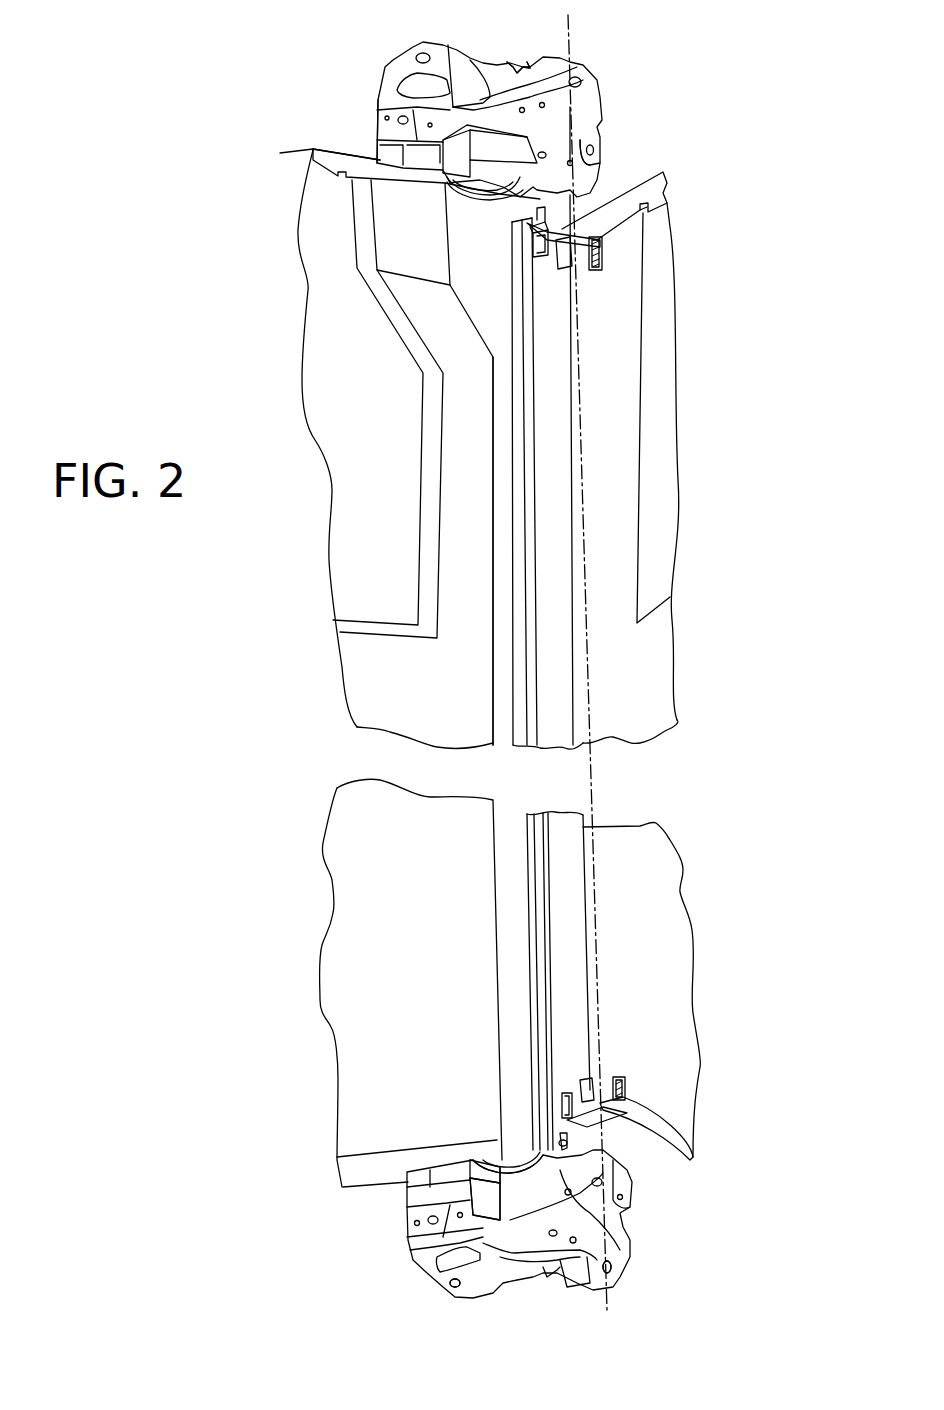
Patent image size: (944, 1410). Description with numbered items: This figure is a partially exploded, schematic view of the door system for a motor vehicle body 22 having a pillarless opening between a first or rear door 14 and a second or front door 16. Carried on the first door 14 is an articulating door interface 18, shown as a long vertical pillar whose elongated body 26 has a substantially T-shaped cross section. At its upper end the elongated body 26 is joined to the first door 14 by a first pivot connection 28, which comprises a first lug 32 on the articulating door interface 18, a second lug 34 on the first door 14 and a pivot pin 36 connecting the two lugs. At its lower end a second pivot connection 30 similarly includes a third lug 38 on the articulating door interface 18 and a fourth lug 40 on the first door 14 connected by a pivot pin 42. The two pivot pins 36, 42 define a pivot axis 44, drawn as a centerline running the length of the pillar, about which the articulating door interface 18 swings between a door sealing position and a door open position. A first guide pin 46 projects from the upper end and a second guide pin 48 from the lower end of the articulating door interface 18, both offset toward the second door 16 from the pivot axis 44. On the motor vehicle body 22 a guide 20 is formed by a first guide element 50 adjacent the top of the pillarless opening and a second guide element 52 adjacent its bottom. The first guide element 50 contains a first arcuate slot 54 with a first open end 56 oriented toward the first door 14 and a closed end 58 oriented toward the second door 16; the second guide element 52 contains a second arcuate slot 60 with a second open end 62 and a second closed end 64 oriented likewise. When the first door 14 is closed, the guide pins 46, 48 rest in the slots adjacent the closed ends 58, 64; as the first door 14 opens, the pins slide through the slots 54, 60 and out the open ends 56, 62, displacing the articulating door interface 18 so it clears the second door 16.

The first door 14 is at (663, 527).
The second door 16 is at (400, 705).
The articulating door interface 18 is at (550, 490).
The guide 20 is at (427, 231).
The motor vehicle body 22 is at (597, 100).
The elongated body 26 is at (566, 716).
The first pivot connection 28 is at (497, 276).
The second pivot connection 30 is at (537, 1061).
The first lug 32 is at (583, 232).
The second lug 34 is at (596, 240).
The pivot pin 36 is at (570, 178).
The third lug 38 is at (587, 1093).
The fourth lug 40 is at (627, 1097).
The pivot pin 42 is at (600, 1100).
The pivot axis 44 is at (592, 769).
The first guide pin 46 is at (540, 207).
The second guide pin 48 is at (653, 1175).
The first guide element 50 is at (385, 125).
The second guide element 52 is at (413, 1208).
The first arcuate slot 54 is at (488, 175).
The first open end 56 is at (580, 165).
The closed end 58 is at (447, 147).
The second arcuate slot 60 is at (443, 1280).
The second open end 62 is at (612, 1250).
The second closed end 64 is at (477, 1170).